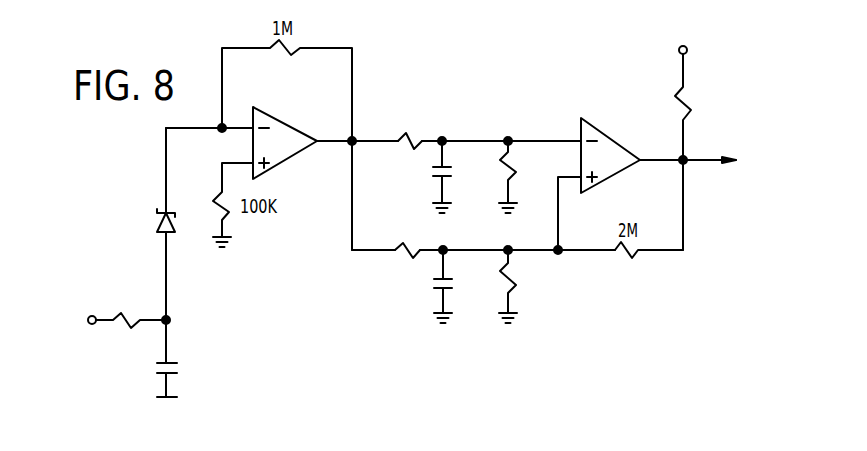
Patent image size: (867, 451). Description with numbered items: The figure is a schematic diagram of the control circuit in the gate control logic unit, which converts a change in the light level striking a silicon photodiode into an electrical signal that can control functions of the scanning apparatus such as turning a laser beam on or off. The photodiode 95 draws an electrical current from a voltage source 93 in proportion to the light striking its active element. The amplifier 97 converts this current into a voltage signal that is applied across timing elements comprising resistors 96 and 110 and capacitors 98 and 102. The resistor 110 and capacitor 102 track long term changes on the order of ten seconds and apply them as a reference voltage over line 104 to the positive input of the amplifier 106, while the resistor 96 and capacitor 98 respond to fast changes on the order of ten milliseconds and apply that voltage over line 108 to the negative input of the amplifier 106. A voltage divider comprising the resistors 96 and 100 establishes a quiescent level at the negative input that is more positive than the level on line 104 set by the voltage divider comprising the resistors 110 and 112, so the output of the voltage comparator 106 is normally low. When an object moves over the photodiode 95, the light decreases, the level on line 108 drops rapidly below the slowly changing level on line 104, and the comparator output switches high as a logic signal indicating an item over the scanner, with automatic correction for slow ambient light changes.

The voltage source 93 is at (688, 51).
The photodiode 95 is at (158, 225).
The resistor 96 is at (418, 136).
The amplifier 97 is at (279, 121).
The capacitor 98 is at (433, 171).
The resistor 100 is at (514, 173).
The capacitor 102 is at (433, 284).
The line 104 is at (560, 214).
The amplifier 106 is at (604, 134).
The line 108 is at (487, 139).
The resistor 110 is at (403, 257).
The resistor 112 is at (515, 284).